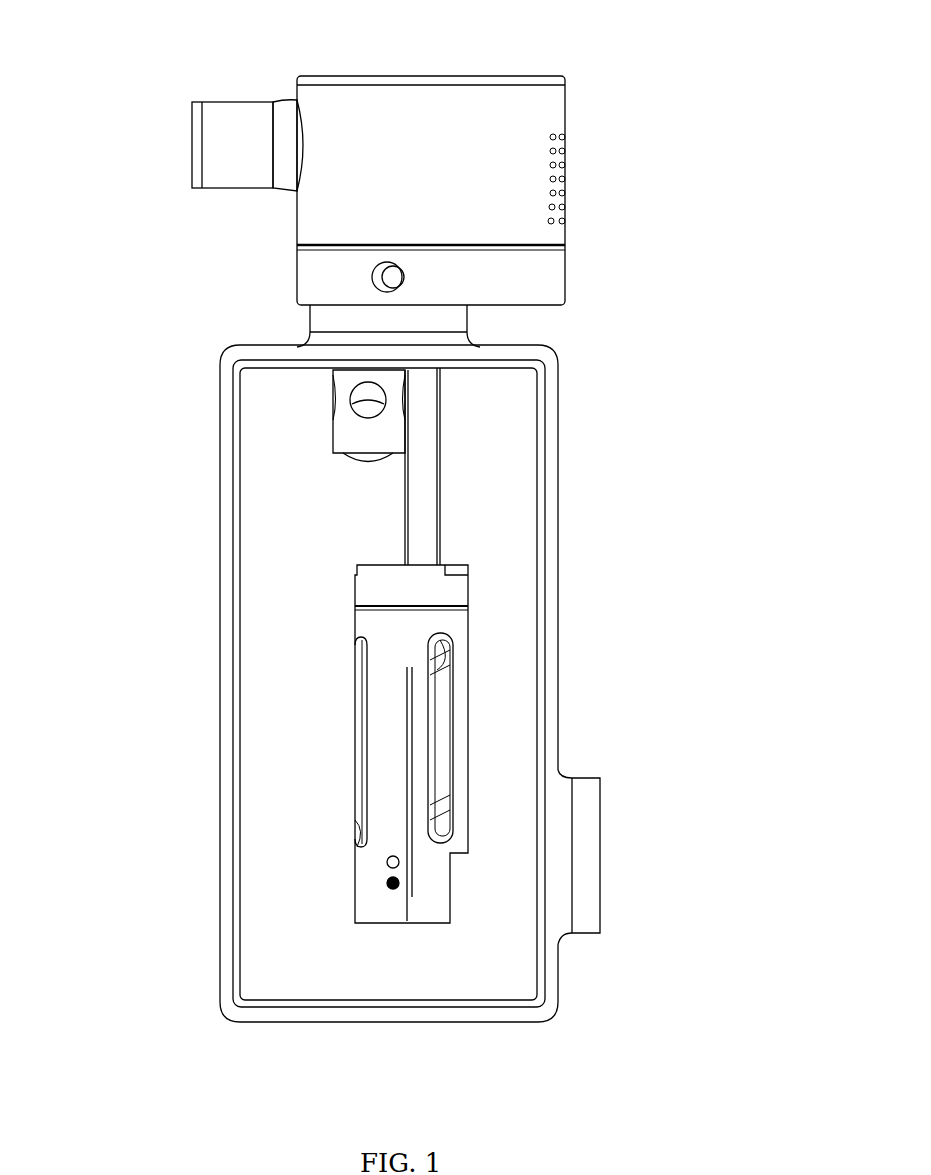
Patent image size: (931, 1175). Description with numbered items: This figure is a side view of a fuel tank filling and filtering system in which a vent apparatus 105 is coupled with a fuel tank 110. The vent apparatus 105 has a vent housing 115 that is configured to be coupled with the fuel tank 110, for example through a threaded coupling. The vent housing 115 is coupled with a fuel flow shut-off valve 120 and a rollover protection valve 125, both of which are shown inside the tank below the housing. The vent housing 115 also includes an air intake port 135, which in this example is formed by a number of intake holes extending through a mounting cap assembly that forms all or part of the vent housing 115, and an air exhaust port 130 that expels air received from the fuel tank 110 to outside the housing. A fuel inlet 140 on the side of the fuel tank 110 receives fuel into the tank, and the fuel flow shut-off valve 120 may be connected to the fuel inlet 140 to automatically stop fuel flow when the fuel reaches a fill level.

The vent apparatus 105 is at (378, 73).
The fuel tank 110 is at (557, 411).
The vent housing 115 is at (500, 158).
The fuel flow shut-off valve 120 is at (408, 628).
The rollover protection valve 125 is at (358, 437).
The air exhaust port 130 is at (238, 102).
The air intake port 135 is at (565, 215).
The fuel inlet 140 is at (600, 933).